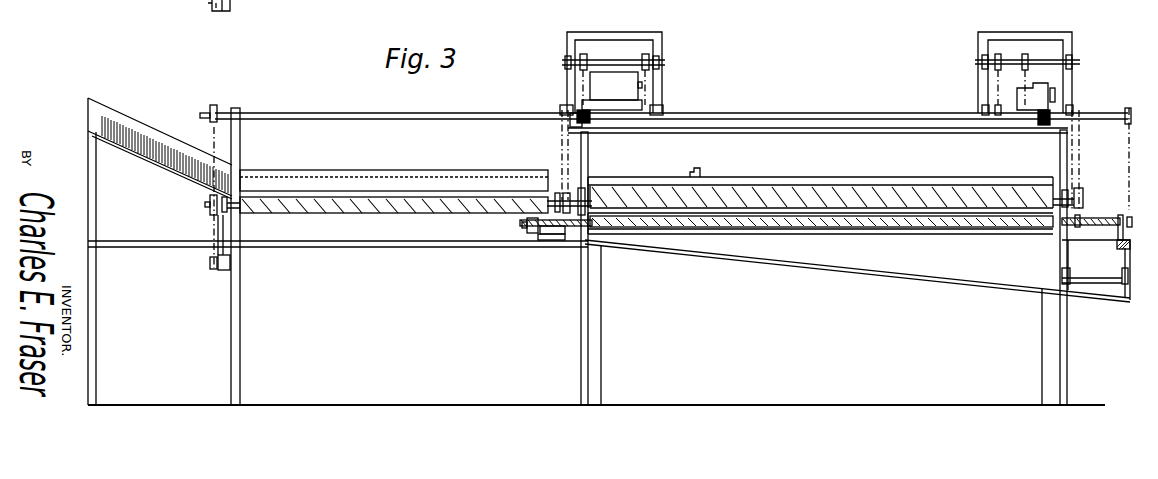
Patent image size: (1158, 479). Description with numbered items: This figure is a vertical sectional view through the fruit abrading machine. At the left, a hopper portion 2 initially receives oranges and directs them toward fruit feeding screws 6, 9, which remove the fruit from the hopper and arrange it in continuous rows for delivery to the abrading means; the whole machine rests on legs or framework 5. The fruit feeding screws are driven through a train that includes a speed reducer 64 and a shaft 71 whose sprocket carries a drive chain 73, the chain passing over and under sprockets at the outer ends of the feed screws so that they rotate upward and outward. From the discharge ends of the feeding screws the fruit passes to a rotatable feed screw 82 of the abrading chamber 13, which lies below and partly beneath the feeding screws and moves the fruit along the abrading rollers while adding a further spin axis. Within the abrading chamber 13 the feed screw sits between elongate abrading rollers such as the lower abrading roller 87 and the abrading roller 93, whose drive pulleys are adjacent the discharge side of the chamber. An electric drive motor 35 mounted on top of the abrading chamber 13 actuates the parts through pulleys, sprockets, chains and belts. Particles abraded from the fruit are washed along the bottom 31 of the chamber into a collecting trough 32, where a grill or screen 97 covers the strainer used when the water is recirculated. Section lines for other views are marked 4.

The hopper portion 2 is at (83, 197).
The section line 4- 4 is at (1130, 10).
The framework 5 is at (96, 344).
The fruit feeding screw 6 is at (252, 102).
The fruit feeding screw 9 is at (372, 216).
The abrading chamber 13 is at (840, 108).
The bottom of the abrading chamber 31 is at (960, 286).
The collecting trough 32 is at (1085, 295).
The electric drive motor 35 is at (612, 77).
The speed reducer 64 is at (1036, 86).
The shaft 71 is at (500, 99).
The drive chain 73 is at (208, 130).
The feed screw of the abrading chamber 82 is at (576, 240).
The lower abrading roller 87 is at (878, 233).
The abrading roller 93 is at (876, 187).
The grill or screen 97 is at (1080, 273).